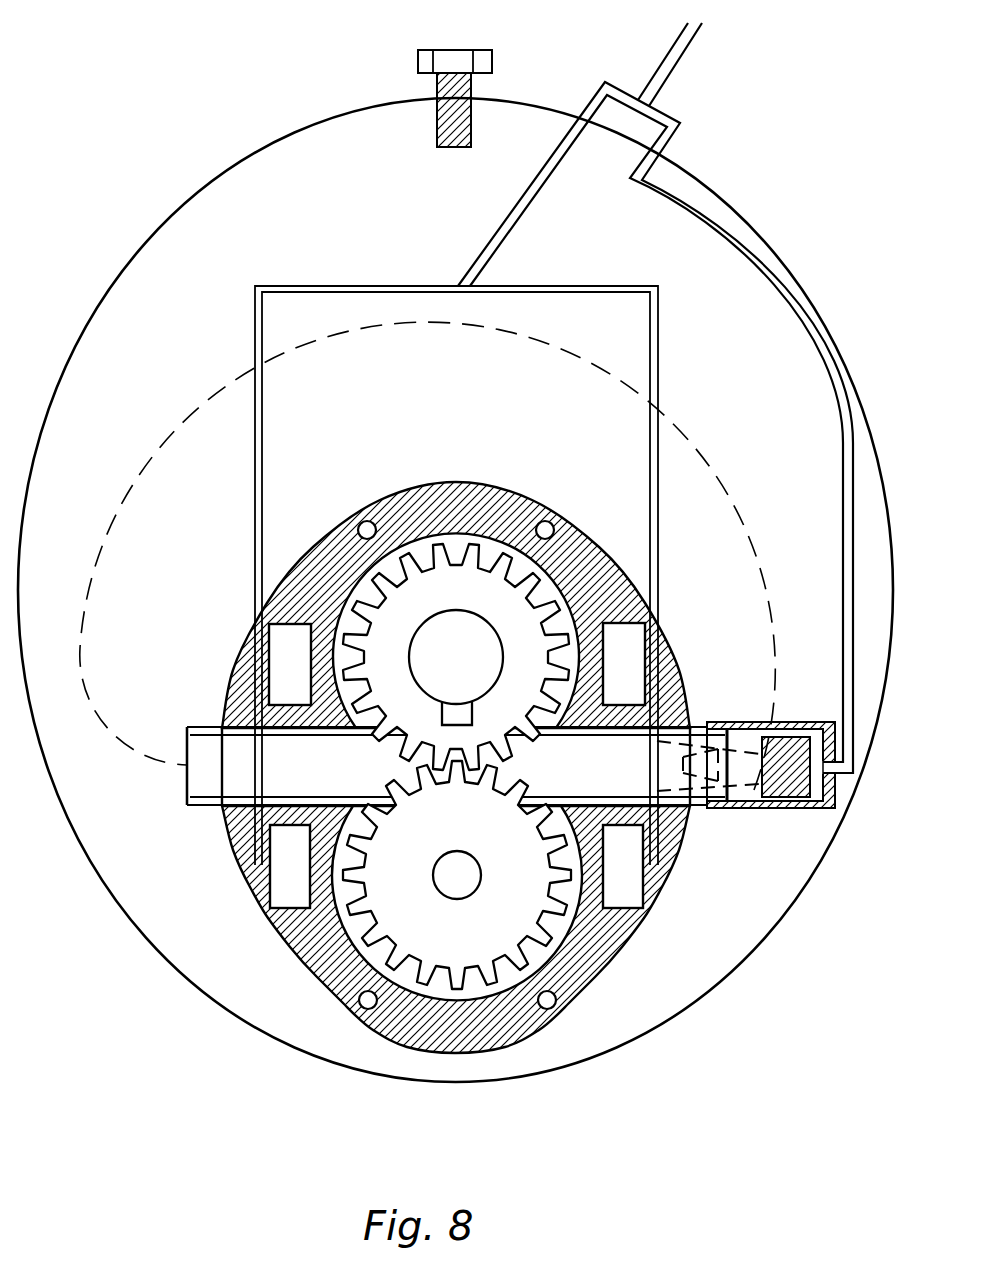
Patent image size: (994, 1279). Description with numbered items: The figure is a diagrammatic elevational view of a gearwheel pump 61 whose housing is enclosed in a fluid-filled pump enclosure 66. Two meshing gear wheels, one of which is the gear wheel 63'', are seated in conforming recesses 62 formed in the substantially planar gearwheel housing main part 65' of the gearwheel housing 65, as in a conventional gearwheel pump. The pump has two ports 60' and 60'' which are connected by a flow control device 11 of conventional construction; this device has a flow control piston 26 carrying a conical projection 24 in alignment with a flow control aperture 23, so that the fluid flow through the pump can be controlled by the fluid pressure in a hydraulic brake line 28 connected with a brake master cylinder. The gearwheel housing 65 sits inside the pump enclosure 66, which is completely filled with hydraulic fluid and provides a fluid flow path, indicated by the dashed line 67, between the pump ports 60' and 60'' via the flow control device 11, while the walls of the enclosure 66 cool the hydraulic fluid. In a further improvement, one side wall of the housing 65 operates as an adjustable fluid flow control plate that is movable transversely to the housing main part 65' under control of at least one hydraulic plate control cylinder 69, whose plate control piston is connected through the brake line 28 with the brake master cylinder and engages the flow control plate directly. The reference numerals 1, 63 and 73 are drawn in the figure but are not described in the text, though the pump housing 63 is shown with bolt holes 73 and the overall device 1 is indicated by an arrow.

The pump device 1 is at (690, 623).
The flow control device 11 is at (697, 715).
The flow control aperture 23 is at (660, 762).
The conical projection 24 is at (746, 720).
The flow control piston 26 is at (792, 812).
The hydraulic brake line 28 is at (743, 253).
The port 60' is at (171, 714).
The port 60'' is at (732, 800).
The gearwheel pump 61 is at (742, 155).
The conforming recesses 62 is at (452, 534).
The pump housing 63 is at (456, 932).
The gear wheel 63'' is at (456, 587).
The gearwheel housing 65 is at (689, 552).
The gearwheel housing main part 65' is at (428, 556).
The pump enclosure 66 is at (688, 1012).
The dashed line 67 is at (483, 322).
The hydraulic plate control cylinder 69 is at (614, 623).
The bolt hole 73 is at (360, 522).